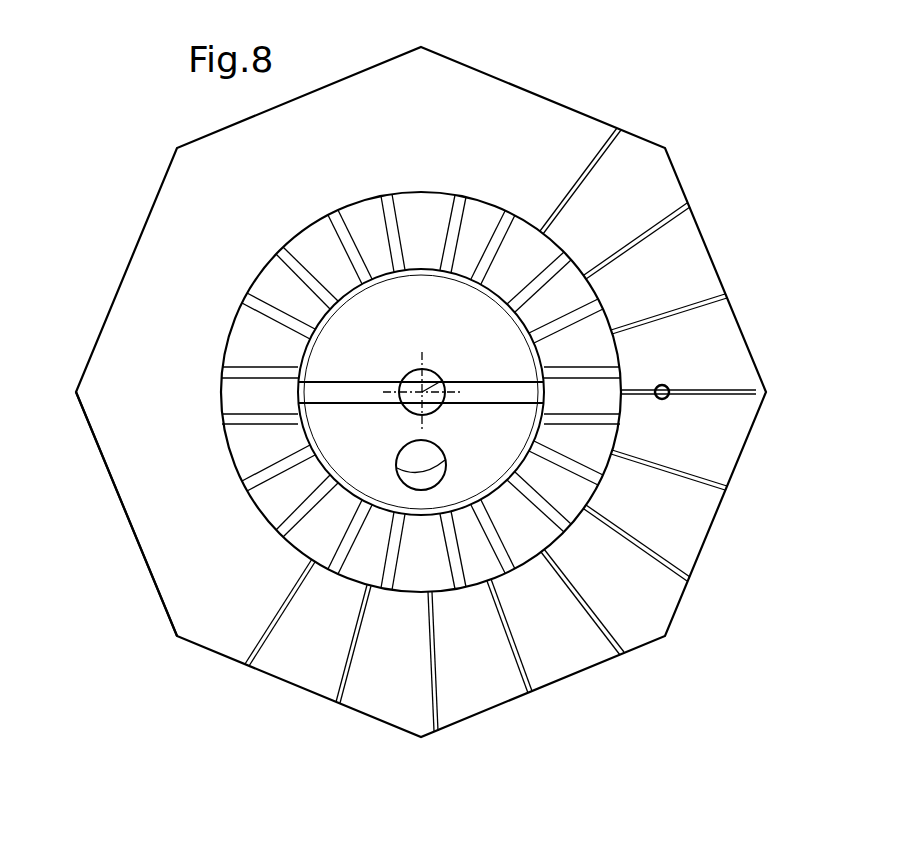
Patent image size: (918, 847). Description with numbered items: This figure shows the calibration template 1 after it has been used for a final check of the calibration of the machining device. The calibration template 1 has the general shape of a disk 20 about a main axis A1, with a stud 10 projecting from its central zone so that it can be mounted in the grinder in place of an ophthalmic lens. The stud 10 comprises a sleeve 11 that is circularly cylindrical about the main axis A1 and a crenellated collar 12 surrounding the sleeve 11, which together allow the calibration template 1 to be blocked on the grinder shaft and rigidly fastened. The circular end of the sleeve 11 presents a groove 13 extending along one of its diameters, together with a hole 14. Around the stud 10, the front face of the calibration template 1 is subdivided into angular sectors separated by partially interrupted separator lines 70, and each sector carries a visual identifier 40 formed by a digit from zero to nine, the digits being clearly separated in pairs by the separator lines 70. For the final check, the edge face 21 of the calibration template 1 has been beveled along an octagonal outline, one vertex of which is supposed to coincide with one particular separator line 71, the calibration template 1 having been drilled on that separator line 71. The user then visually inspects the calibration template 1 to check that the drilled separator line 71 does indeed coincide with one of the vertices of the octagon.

The calibration template 1 is at (92, 260).
The stud 10 is at (493, 189).
The sleeve 11 is at (245, 418).
The crenellated collar 12 is at (240, 460).
The groove 13 is at (347, 390).
The hole 14 is at (398, 464).
The main axis A1 is at (430, 387).
The disk 20 is at (489, 104).
The edge face 21 is at (138, 568).
The visual identifier 40 is at (650, 190).
The separator lines 70 is at (632, 218).
The separator line 71 is at (745, 390).